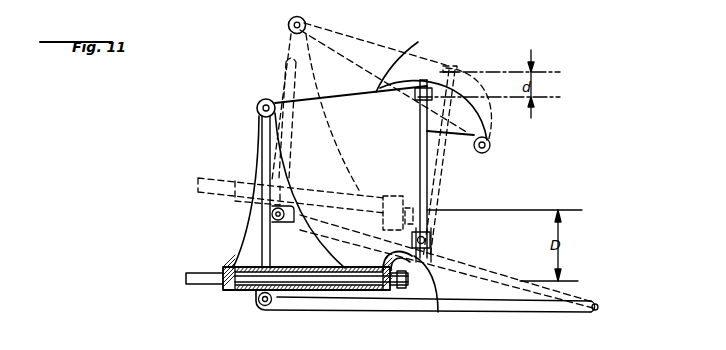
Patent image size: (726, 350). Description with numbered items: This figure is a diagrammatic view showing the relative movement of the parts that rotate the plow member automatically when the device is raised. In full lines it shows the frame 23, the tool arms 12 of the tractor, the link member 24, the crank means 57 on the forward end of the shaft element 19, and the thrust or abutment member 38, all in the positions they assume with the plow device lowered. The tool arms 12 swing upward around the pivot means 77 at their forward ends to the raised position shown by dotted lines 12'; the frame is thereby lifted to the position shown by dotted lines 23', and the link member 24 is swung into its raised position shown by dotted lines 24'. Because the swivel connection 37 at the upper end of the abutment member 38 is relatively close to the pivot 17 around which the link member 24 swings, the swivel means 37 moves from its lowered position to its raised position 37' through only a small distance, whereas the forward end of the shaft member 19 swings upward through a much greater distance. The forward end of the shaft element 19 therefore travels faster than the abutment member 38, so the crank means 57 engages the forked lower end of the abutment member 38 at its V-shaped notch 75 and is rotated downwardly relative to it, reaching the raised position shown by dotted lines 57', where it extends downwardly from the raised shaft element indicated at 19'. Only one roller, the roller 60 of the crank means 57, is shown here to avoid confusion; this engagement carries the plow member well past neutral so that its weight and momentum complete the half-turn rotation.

The tool arms 12 is at (319, 296).
The tool arms in raised position 12' is at (446, 261).
The bell crank 17 is at (491, 146).
The shaft element 19 is at (296, 305).
The shaft element in raised position 19' is at (291, 181).
The frame 23 is at (274, 183).
The frame in raised position 23' is at (298, 113).
The link member 24 is at (407, 64).
The link member in raised position 24' is at (384, 75).
The swivel connection 37 is at (433, 87).
The swivel connection in raised position 37' is at (478, 96).
The abutment member 38 is at (428, 160).
The crank means 57 is at (380, 302).
The crank means in raised position 57' is at (390, 200).
The roller 60 is at (440, 302).
The V-shaped notch 75 is at (432, 240).
The pivot means 77 is at (600, 307).